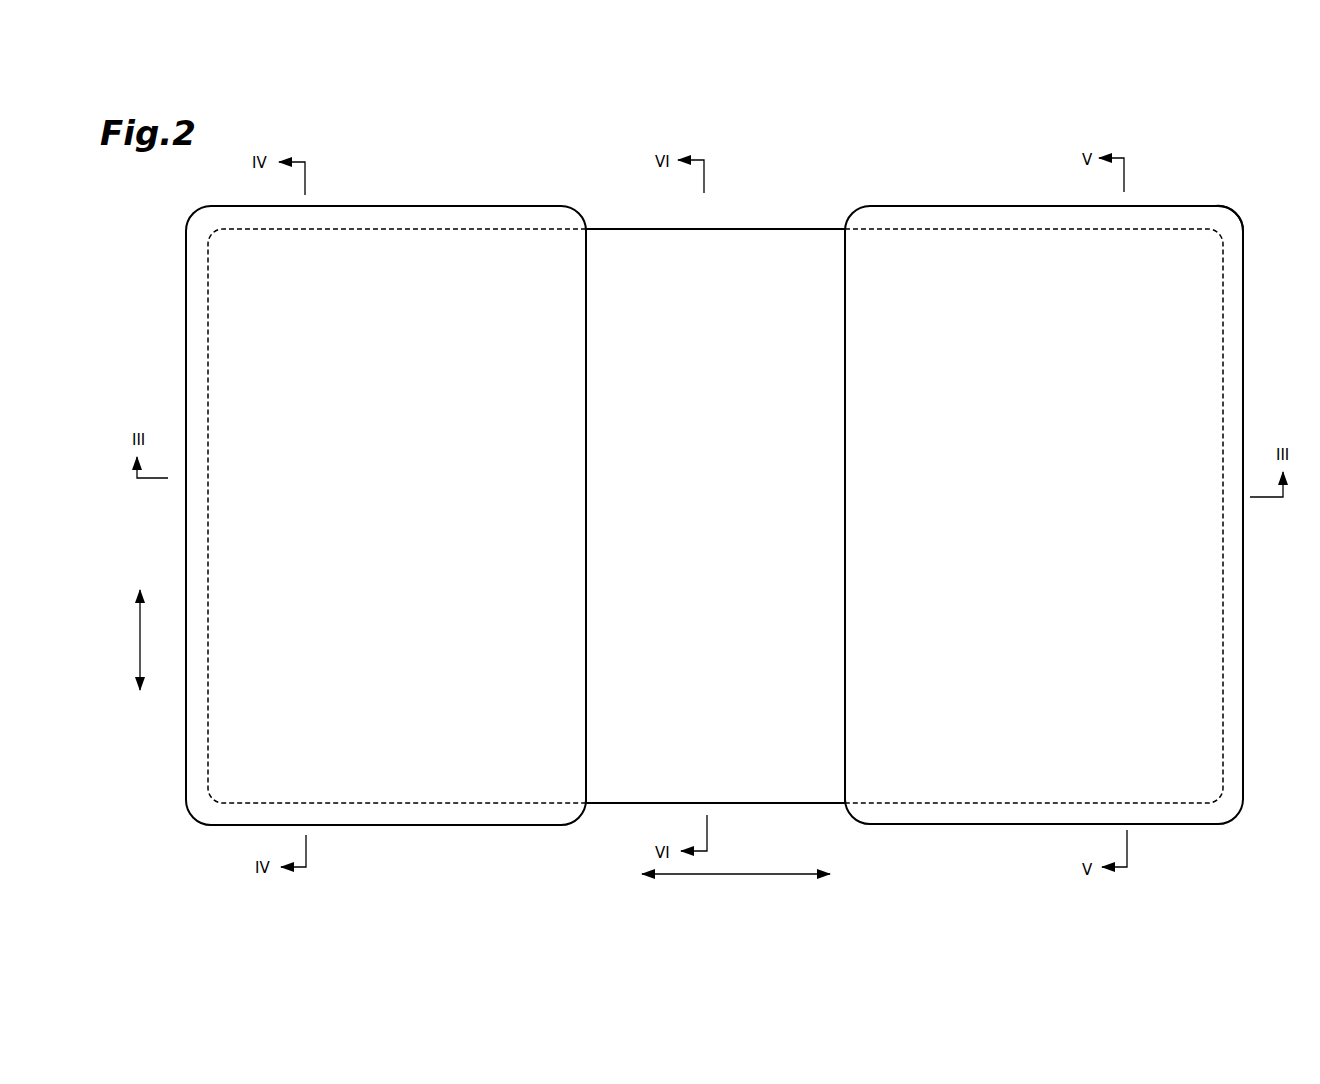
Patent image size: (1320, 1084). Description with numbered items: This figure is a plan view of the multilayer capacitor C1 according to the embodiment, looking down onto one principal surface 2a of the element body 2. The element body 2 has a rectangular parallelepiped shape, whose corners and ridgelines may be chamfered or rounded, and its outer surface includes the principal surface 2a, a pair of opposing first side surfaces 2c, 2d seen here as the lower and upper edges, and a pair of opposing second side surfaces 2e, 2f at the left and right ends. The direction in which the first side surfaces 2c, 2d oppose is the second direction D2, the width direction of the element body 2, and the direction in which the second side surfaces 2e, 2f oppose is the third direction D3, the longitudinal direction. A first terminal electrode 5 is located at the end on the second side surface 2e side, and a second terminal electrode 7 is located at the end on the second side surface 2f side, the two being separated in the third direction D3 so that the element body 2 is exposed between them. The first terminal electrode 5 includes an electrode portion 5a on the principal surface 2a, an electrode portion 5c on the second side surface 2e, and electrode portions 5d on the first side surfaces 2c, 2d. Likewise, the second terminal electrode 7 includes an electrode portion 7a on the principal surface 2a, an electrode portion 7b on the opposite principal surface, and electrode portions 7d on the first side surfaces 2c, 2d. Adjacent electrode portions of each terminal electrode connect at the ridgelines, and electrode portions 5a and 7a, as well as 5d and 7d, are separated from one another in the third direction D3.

The element body 2 is at (759, 226).
The principal surface 2a is at (825, 393).
The first side surface 2c is at (790, 804).
The first side surface 2d is at (805, 228).
The second side surface 2e is at (208, 540).
The second side surface 2f is at (1224, 671).
The first terminal electrode 5 is at (529, 205).
The electrode portion 5a is at (558, 535).
The electrode portion 5c is at (177, 338).
The electrode portions 5d is at (401, 206).
The second terminal electrode 7 is at (1244, 808).
The electrode portion 7a is at (882, 588).
The electrode portion 7b is at (1245, 362).
The electrode portions 7d is at (1005, 205).
The multilayer capacitor C1 is at (1236, 189).
The second direction D2 is at (140, 635).
The third direction D3 is at (736, 892).